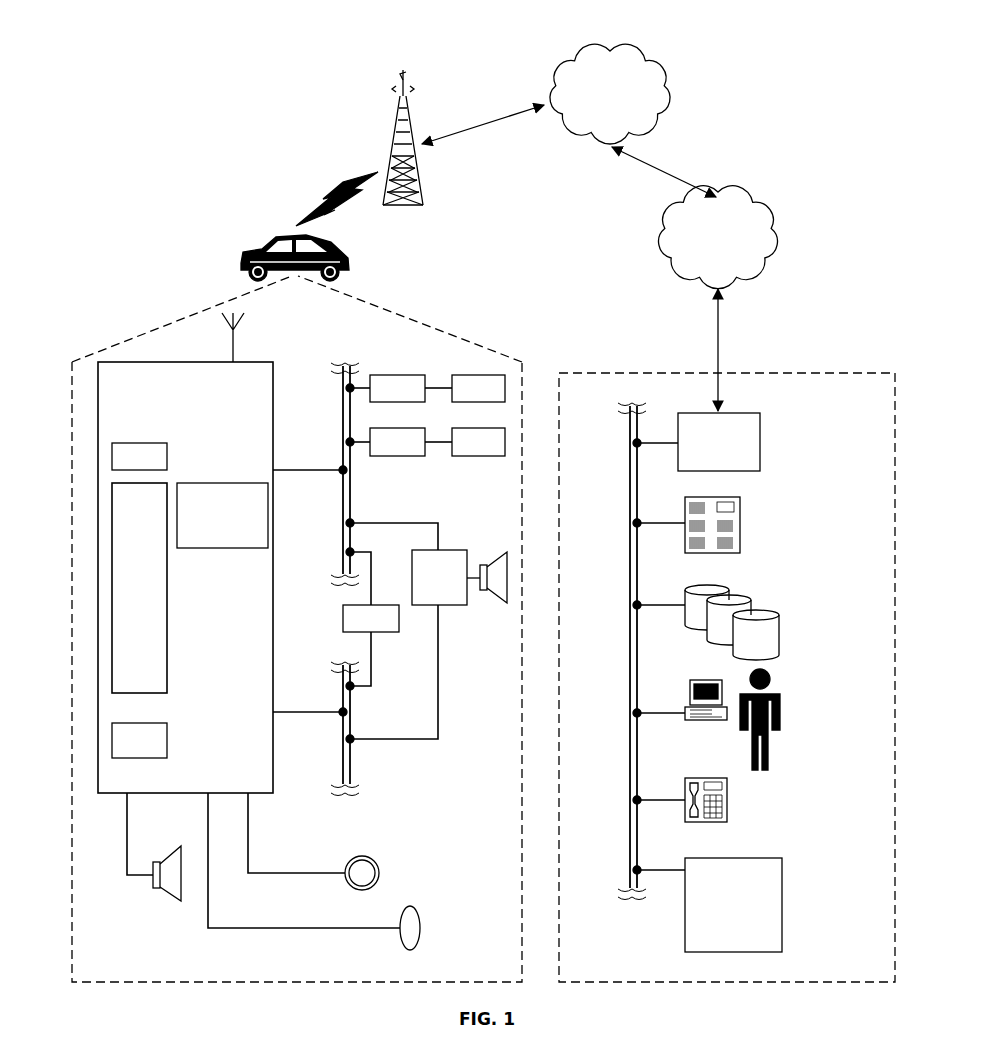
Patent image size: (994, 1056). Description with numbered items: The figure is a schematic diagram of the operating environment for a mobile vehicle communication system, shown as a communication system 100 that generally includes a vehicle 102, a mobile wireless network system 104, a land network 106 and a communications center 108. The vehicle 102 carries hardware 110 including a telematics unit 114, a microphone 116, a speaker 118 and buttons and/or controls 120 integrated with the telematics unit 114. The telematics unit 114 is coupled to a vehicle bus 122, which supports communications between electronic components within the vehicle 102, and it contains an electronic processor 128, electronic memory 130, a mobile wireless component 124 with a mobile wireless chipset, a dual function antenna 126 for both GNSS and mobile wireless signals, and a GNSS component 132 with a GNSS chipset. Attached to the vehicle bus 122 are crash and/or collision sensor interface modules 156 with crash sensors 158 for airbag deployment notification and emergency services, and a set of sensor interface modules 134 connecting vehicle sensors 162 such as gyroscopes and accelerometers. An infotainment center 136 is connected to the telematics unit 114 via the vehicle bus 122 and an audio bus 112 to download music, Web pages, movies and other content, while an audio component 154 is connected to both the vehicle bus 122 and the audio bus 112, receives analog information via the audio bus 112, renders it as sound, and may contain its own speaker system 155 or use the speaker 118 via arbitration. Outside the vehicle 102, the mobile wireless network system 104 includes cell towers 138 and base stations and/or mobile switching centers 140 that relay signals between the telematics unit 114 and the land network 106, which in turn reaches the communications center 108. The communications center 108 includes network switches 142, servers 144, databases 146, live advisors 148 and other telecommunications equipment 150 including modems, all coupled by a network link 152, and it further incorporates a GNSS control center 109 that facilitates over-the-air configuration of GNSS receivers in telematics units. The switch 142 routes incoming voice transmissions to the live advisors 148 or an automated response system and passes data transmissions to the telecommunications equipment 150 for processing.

The communication system 100 is at (418, 36).
The vehicle 102 is at (248, 252).
The mobile wireless network system 104 is at (520, 199).
The land network 106 is at (718, 237).
The communications center 108 is at (827, 946).
The GNSS control center 109 is at (733, 905).
The hardware 110 is at (444, 971).
The audio bus 112 is at (343, 760).
The telematics unit 114 is at (220, 772).
The microphone 116 is at (412, 907).
The speaker 118 is at (165, 895).
The buttons and/or controls 120 is at (357, 857).
The vehicle bus 122 is at (352, 512).
The mobile wireless component 124 is at (139, 456).
The dual function antenna 126 is at (237, 353).
The electronic processor 128 is at (139, 588).
The electronic memory 130 is at (139, 740).
The GNSS component 132 is at (222, 515).
The sensor interface modules 134 is at (397, 442).
The infotainment center 136 is at (371, 618).
The cell towers 138 is at (412, 117).
The base stations and/or mobile switching centers 140 is at (610, 94).
The network switches 142 is at (719, 442).
The servers 144 is at (740, 515).
The databases 146 is at (780, 625).
The live advisors 148 is at (773, 690).
The telecommunications equipment 150 is at (730, 790).
The network link 152 is at (630, 660).
The audio component 154 is at (439, 577).
The speaker system 155 is at (500, 603).
The crash and/or collision sensor interface modules 156 is at (397, 388).
The crash sensors 158 is at (478, 388).
The vehicle sensors 162 is at (478, 442).